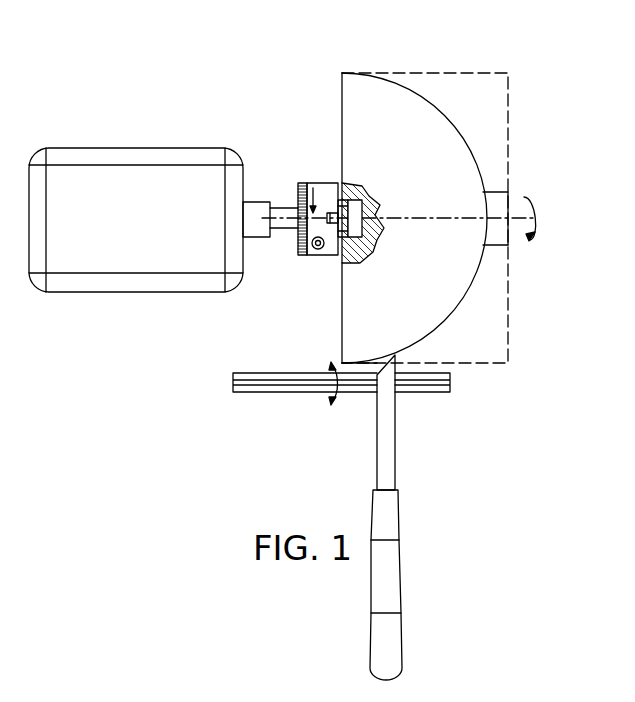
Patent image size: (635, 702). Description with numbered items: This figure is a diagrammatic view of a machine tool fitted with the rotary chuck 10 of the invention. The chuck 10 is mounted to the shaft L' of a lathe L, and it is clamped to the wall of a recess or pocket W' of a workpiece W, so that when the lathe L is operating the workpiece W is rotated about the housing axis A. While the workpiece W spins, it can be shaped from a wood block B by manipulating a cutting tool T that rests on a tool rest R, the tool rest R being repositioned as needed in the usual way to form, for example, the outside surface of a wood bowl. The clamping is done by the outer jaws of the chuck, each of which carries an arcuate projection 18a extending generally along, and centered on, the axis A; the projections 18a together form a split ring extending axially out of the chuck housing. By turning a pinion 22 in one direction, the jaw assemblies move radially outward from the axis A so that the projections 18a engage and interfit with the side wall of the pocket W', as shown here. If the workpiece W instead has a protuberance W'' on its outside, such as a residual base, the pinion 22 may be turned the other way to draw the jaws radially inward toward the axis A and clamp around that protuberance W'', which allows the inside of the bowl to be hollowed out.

The lathe L is at (98, 147).
The shaft L' is at (222, 268).
The rotary chuck 10 is at (300, 168).
The pinion 22 is at (320, 256).
The arcuate projection 18a is at (352, 186).
The workpiece W is at (342, 90).
The recess or pocket W' is at (430, 303).
The protuberance W'' is at (520, 244).
The wood block B is at (447, 73).
The axis A is at (540, 212).
The tool rest R is at (278, 393).
The cutting tool T is at (396, 465).